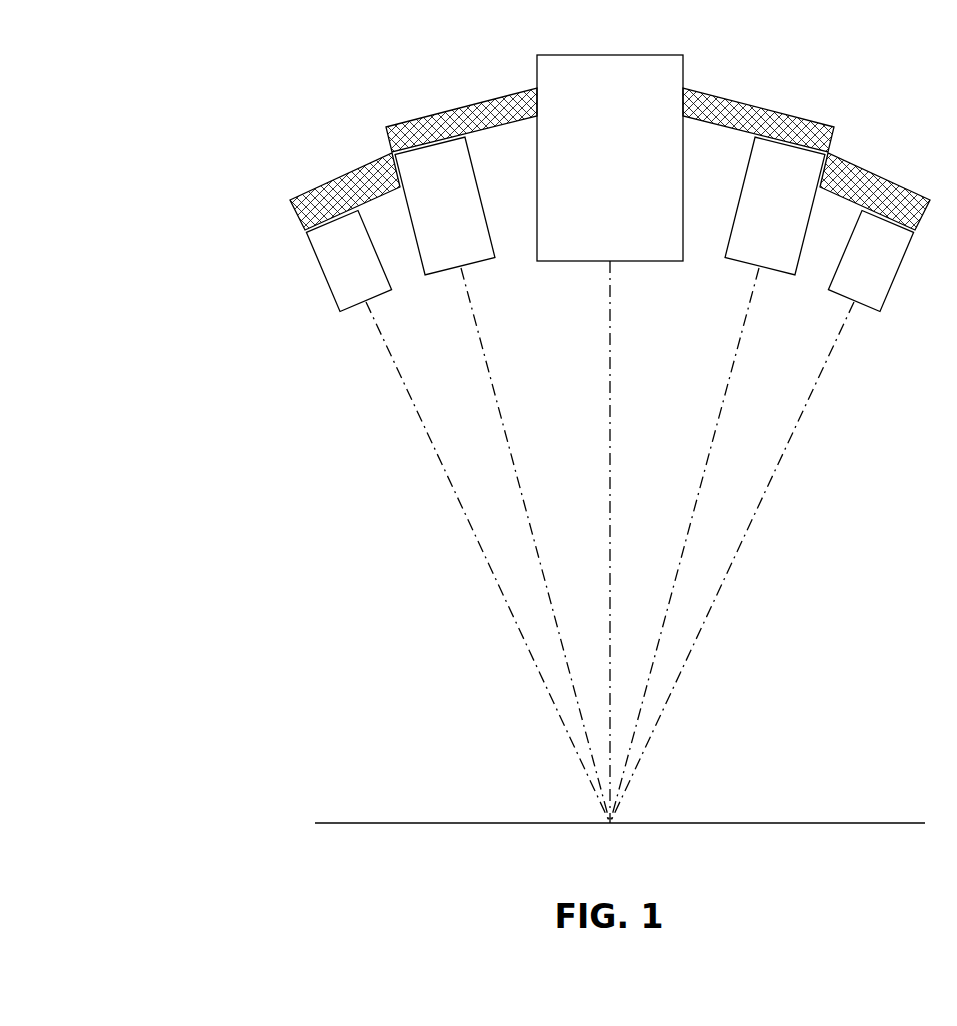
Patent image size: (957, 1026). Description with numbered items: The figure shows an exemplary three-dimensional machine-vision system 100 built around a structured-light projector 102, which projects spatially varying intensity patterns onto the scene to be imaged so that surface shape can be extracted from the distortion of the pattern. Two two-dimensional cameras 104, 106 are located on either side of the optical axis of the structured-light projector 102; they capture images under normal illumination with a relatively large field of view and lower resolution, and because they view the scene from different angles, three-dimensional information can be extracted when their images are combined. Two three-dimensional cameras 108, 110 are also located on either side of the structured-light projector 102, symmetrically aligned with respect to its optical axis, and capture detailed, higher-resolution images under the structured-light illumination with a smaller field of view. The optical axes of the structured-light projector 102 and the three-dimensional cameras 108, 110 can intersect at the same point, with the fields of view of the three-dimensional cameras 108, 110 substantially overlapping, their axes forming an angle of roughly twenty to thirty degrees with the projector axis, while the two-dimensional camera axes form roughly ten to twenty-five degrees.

The machine-vision system 100 is at (94, 194).
The structured-light projector 102 is at (612, 55).
The 2D camera 104 is at (483, 262).
The 2D camera 106 is at (723, 257).
The 3D camera 108 is at (325, 283).
The 3D camera 110 is at (902, 273).